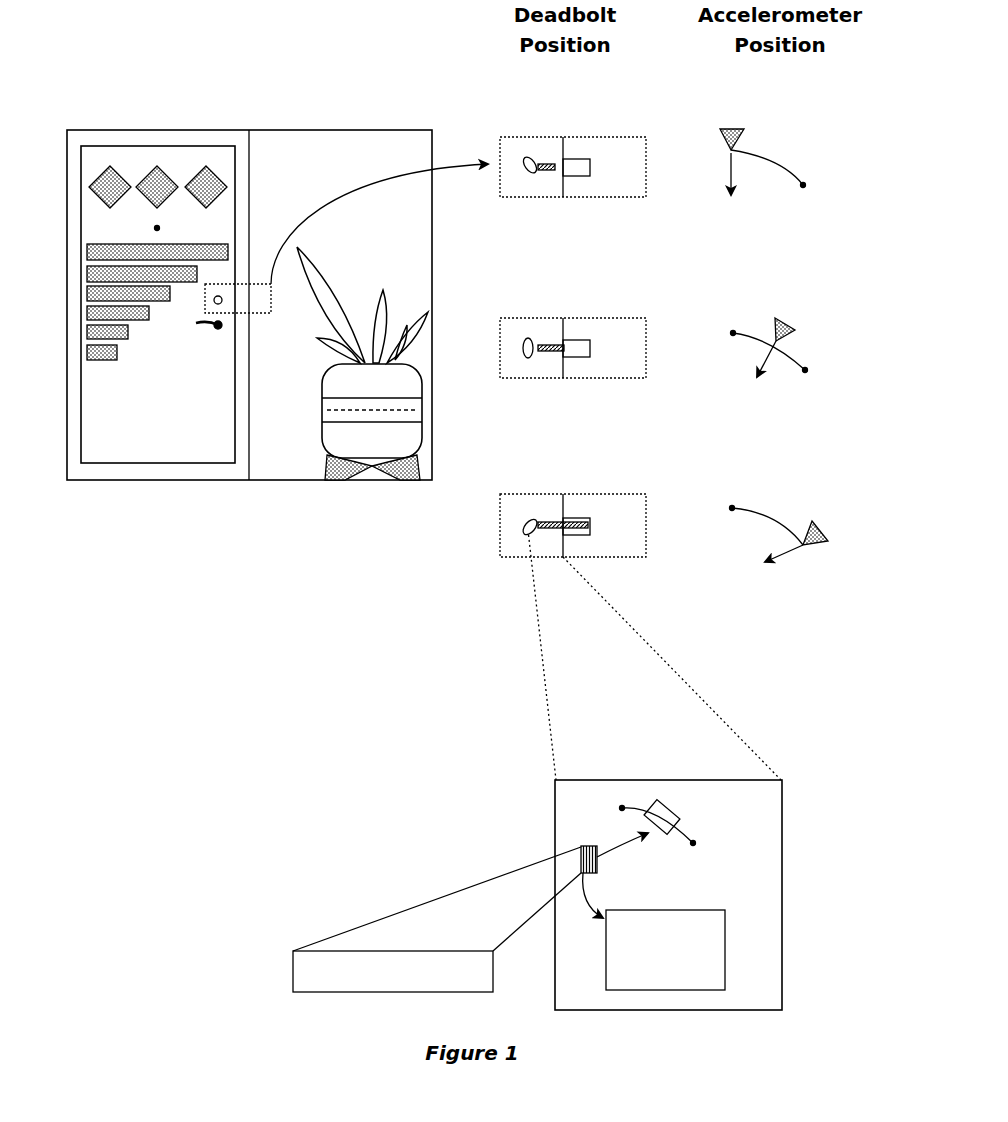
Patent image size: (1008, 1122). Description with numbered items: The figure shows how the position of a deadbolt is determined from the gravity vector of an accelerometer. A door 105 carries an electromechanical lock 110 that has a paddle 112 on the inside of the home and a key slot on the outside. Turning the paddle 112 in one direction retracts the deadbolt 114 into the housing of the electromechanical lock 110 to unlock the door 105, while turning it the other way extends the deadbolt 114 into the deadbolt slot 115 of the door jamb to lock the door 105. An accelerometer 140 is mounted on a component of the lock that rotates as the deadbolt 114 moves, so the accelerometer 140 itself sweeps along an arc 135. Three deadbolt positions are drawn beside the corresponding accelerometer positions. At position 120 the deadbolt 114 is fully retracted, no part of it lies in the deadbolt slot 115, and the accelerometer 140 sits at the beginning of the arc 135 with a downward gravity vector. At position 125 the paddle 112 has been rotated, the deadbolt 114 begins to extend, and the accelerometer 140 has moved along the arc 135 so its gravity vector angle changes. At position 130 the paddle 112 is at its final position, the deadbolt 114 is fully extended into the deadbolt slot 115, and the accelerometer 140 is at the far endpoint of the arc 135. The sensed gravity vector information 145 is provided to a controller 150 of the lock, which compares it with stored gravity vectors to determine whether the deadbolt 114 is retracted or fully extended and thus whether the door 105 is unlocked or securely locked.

The door 105 is at (185, 146).
The electromechanical lock 110 is at (222, 285).
The paddle 112 is at (533, 178).
The deadbolt 114 is at (546, 172).
The deadbolt slot 115 is at (578, 152).
The position 120 is at (736, 133).
The position 125 is at (737, 315).
The position 130 is at (747, 495).
The arc 135 is at (694, 828).
The accelerometer 140 is at (667, 800).
The gravity vector information 145 is at (470, 912).
The controller 150 is at (665, 950).